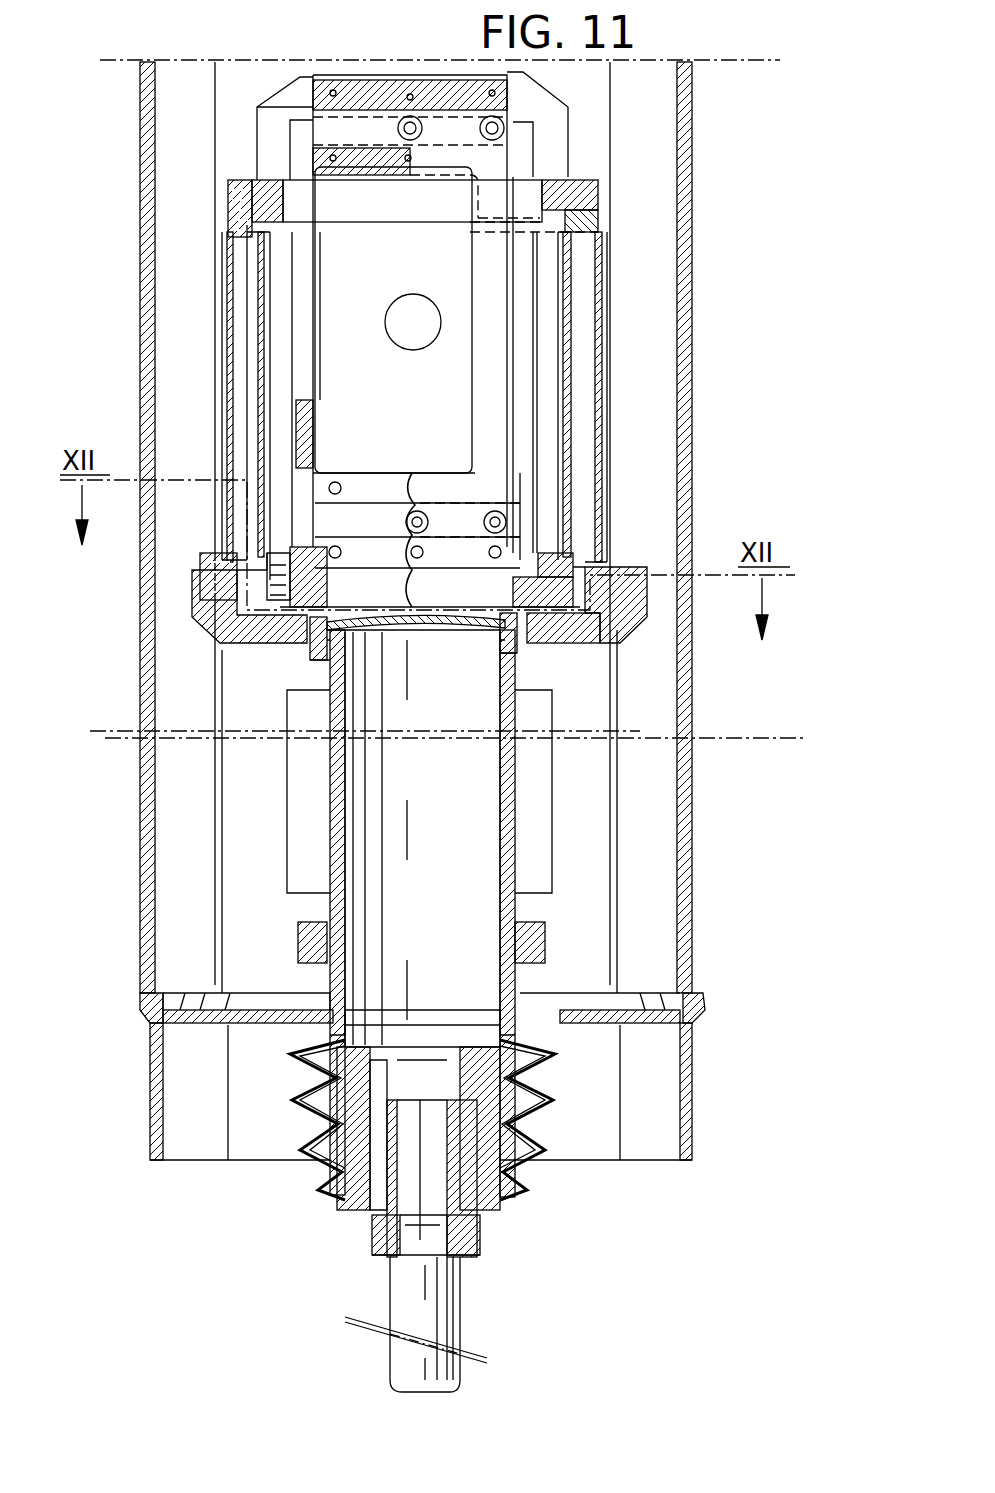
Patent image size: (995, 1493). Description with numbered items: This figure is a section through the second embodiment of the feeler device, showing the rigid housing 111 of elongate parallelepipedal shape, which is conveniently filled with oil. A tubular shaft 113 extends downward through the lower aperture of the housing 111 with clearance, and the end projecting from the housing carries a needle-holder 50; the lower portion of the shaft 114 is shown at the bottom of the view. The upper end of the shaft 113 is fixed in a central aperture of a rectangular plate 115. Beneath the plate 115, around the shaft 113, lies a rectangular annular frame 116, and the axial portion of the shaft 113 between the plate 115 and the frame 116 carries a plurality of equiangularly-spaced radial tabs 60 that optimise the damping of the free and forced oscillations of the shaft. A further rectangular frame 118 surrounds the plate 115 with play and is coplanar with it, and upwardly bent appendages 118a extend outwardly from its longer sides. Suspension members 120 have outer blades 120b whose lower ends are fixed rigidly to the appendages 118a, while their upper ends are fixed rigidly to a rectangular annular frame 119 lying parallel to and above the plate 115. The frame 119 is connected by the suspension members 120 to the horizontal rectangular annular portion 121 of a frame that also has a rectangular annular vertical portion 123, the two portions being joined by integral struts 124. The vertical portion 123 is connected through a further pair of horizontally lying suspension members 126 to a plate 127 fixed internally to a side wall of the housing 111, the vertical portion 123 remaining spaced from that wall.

The needle-holder 50 is at (478, 1268).
The radial tabs 60 is at (300, 817).
The housing 111 is at (150, 808).
The shaft 113 is at (345, 855).
The piston rod 114 is at (410, 1292).
The rectangular plate 115 is at (325, 645).
The rectangular annular frame 116 is at (300, 940).
The rectangular frame 118 is at (225, 635).
The upwardly bent appendages 118a is at (190, 575).
The rectangular annular frame 119 is at (287, 197).
The suspension members 120 is at (222, 345).
The outer blades 120b is at (228, 395).
The horizontal rectangular annular portion 121 is at (325, 590).
The rectangular annular vertical portion 123 is at (288, 97).
The struts 124 is at (300, 375).
The suspension members 126 is at (360, 128).
The plate 127 is at (355, 278).